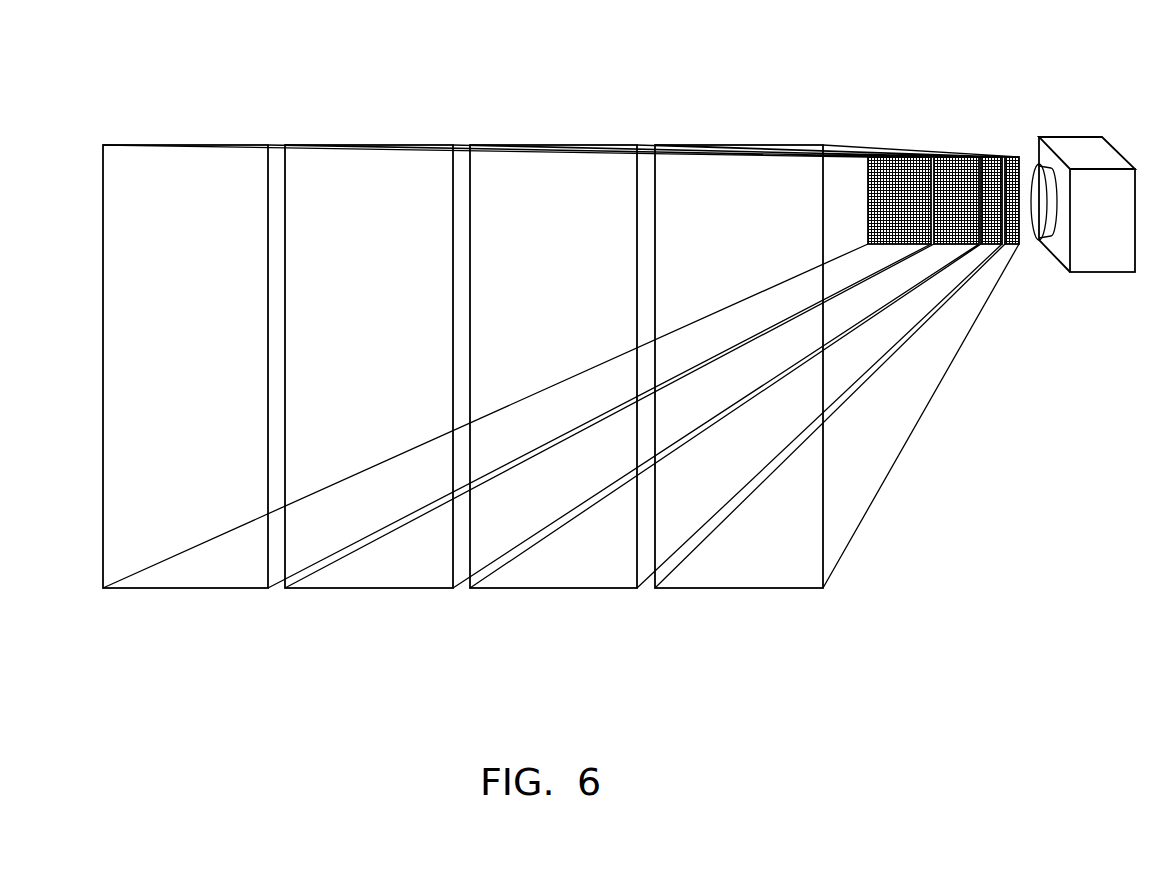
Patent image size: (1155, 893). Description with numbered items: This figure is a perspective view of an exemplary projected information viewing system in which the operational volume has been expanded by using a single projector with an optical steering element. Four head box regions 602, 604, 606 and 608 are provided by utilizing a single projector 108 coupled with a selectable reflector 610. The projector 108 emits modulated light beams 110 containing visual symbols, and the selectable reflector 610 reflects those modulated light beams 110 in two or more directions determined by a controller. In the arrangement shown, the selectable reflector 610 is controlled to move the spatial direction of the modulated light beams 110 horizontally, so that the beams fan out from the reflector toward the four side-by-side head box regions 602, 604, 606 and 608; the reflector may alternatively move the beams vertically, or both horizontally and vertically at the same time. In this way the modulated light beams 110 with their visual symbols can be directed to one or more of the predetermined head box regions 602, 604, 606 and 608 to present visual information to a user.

The head box region 602 is at (208, 498).
The head box region 604 is at (393, 493).
The head box region 606 is at (583, 467).
The head box region 608 is at (753, 528).
The selectable reflector 610 is at (957, 158).
The projector 108 is at (1099, 272).
The modulated light beams 110 is at (893, 462).